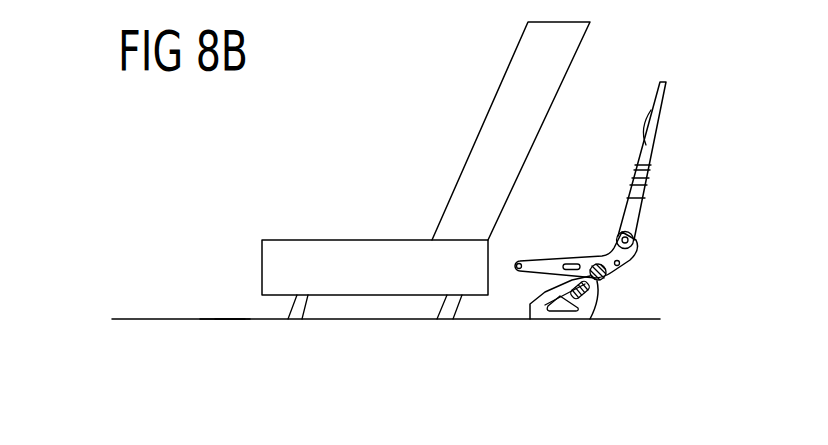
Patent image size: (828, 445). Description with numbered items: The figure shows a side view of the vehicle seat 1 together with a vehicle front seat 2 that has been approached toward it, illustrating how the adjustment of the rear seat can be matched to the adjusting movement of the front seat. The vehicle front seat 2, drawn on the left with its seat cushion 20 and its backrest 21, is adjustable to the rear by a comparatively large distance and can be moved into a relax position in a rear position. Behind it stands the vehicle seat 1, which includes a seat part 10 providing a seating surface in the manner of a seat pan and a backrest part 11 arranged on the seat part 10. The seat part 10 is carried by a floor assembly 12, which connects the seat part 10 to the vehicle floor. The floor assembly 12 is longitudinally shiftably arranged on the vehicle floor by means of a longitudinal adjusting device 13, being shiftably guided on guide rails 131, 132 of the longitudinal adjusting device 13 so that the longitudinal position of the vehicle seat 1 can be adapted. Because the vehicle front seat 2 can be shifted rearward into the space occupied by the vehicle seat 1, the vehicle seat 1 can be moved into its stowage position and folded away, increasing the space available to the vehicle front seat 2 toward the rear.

The vehicle seat 1 is at (628, 208).
The vehicle front seat 2 is at (426, 170).
The seat part 10 is at (543, 262).
The backrest part 11 is at (665, 128).
The floor assembly 12 is at (577, 310).
The longitudinal adjusting device 13 is at (260, 334).
The seat cushion 20 is at (330, 252).
The backrest 21 is at (515, 90).
The guide rail 131 is at (228, 318).
The guide rail 132 is at (228, 318).